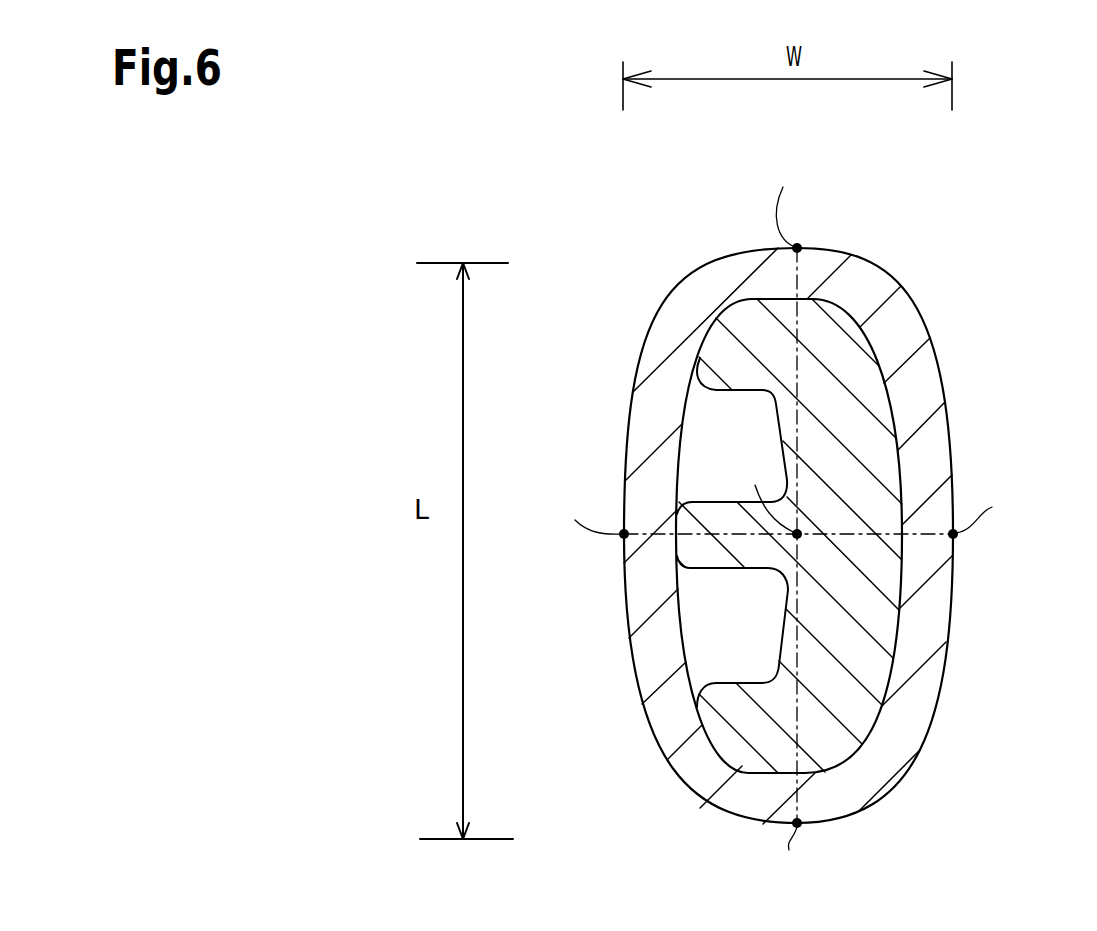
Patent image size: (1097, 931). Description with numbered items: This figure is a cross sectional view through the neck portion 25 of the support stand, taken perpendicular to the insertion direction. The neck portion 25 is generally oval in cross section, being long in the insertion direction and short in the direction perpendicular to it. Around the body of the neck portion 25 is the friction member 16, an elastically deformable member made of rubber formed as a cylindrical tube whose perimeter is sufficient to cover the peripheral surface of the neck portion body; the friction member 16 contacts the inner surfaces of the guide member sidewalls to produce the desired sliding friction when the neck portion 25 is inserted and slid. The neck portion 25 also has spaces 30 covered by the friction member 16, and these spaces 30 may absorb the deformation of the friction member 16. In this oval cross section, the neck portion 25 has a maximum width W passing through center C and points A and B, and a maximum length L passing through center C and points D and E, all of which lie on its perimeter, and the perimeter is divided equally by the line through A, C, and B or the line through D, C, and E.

The friction member 16 is at (927, 387).
The neck portion 25 is at (821, 521).
The spaces 30 is at (720, 433).